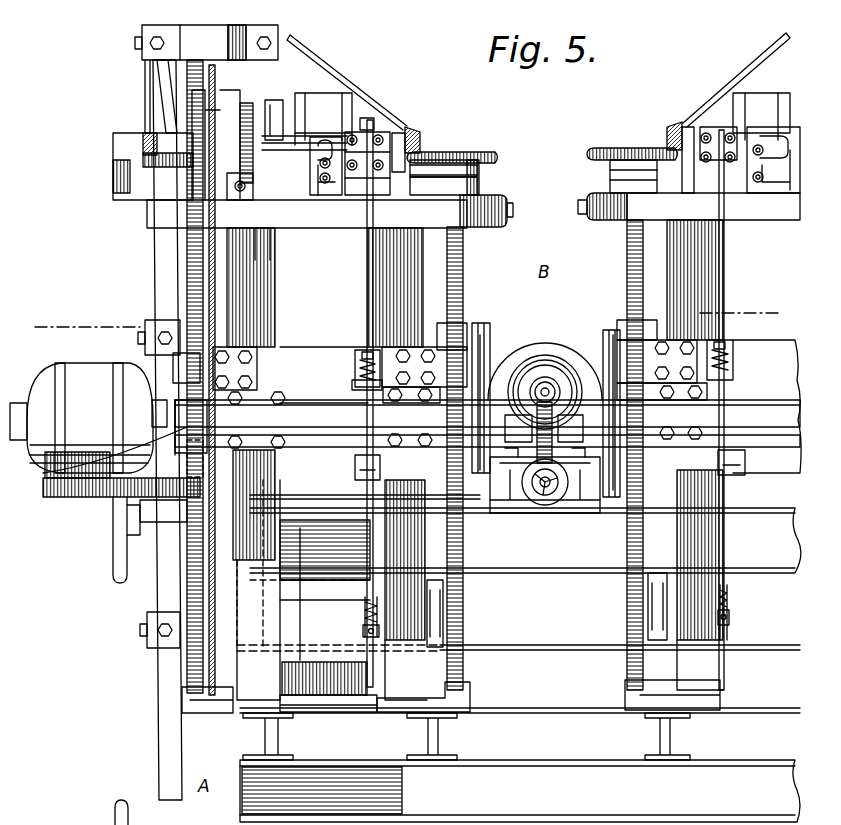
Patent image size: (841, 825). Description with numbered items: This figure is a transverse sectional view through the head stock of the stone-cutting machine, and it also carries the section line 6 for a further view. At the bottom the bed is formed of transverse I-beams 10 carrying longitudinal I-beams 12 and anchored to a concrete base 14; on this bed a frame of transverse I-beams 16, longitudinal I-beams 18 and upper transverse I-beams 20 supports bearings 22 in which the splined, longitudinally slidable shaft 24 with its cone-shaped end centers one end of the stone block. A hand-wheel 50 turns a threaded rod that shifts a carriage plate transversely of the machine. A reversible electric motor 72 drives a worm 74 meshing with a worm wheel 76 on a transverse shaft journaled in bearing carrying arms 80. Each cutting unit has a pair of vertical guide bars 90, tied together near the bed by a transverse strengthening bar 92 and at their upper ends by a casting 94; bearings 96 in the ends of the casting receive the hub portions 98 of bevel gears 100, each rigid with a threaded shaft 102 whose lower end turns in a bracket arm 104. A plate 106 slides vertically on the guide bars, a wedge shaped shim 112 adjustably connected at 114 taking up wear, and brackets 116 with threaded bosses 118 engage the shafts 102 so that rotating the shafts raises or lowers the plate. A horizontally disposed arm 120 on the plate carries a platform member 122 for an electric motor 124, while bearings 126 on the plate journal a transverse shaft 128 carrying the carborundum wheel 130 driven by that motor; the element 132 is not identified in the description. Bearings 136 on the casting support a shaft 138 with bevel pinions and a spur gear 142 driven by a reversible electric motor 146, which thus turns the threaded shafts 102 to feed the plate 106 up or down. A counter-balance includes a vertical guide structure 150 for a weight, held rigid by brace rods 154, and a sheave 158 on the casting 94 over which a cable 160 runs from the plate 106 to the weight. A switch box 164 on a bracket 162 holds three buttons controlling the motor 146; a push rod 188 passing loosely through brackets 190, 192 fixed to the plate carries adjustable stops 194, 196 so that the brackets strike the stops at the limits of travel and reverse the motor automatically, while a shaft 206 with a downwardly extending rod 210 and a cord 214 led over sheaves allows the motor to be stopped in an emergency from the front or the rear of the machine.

The section line 6 is at (404, 321).
The base 10 is at (520, 791).
The I-beam support 12 is at (418, 740).
The post 14 is at (156, 812).
The frame sill 16 is at (520, 722).
The upright section 18 is at (428, 619).
The cross beam 20 is at (544, 574).
The housing 22 is at (575, 500).
The sheave 24 is at (537, 502).
The lever 50 is at (115, 560).
The pulley 72 is at (545, 386).
The pulley hub 74 is at (535, 392).
The shaft 76 is at (559, 389).
The bearing block 80 is at (544, 432).
The column 90 is at (268, 291).
The hatched plate 92 is at (298, 665).
The cylinder 94 is at (618, 210).
The spring rod 96 is at (480, 190).
The stem 98 is at (479, 174).
The gear 100 is at (168, 168).
The rack 102 is at (188, 296).
The foot block 104 is at (220, 714).
The panel 106 is at (540, 406).
The bar 112 is at (225, 493).
The bracket 114 is at (223, 490).
The bolted block 116 is at (250, 368).
The guide block 118 is at (182, 365).
The bracket 120 is at (178, 438).
The platform 122 is at (80, 492).
The motor 124 is at (88, 420).
The beam 126 is at (487, 411).
The beam 128 is at (487, 441).
The bar 130 is at (509, 348).
The fork bar 132 is at (518, 322).
The wedge 136 is at (400, 130).
The shaft 138 is at (298, 143).
The gear 142 is at (246, 102).
The block 146 is at (332, 105).
The post 150 is at (158, 696).
The lever 154 is at (165, 88).
The top block 158 is at (210, 68).
The beam 160 is at (209, 217).
The bearing block 162 is at (372, 198).
The bracket 164 is at (332, 196).
The rod 188 is at (367, 258).
The bracket 190 is at (357, 381).
The bracket 192 is at (360, 466).
The spring 194 is at (357, 355).
The spring 196 is at (365, 614).
The bearing 206 is at (262, 200).
The column top 210 is at (263, 245).
The block 214 is at (284, 108).